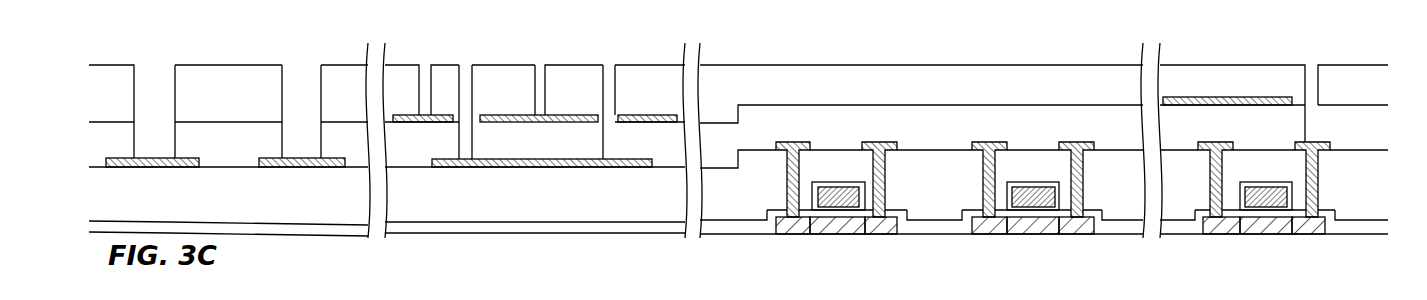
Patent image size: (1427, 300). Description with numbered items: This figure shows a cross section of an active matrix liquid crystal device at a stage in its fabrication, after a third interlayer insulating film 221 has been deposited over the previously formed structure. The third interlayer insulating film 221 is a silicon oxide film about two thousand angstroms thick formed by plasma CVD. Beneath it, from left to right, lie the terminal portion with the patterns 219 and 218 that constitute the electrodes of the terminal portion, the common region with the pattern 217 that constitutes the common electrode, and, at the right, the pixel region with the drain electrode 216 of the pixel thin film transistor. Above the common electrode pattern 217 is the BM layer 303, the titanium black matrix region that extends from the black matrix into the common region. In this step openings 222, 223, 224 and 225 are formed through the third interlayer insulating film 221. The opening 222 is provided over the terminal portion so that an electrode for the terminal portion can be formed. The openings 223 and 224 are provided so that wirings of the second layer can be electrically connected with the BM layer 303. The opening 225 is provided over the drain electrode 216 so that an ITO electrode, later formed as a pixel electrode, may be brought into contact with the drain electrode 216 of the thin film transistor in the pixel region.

The drain electrode 216 is at (1320, 142).
The pattern constituting the common electrode 217 is at (517, 167).
The pattern constituting an electrode of the terminal portion 218 is at (290, 167).
The pattern constituting an electrode of the terminal portion 219 is at (155, 167).
The third interlayer insulating film 221 is at (808, 75).
The opening 222 is at (149, 63).
The opening 223 is at (540, 63).
The opening 224 is at (465, 63).
The opening 225 is at (1308, 63).
The BM layer 303 is at (517, 122).